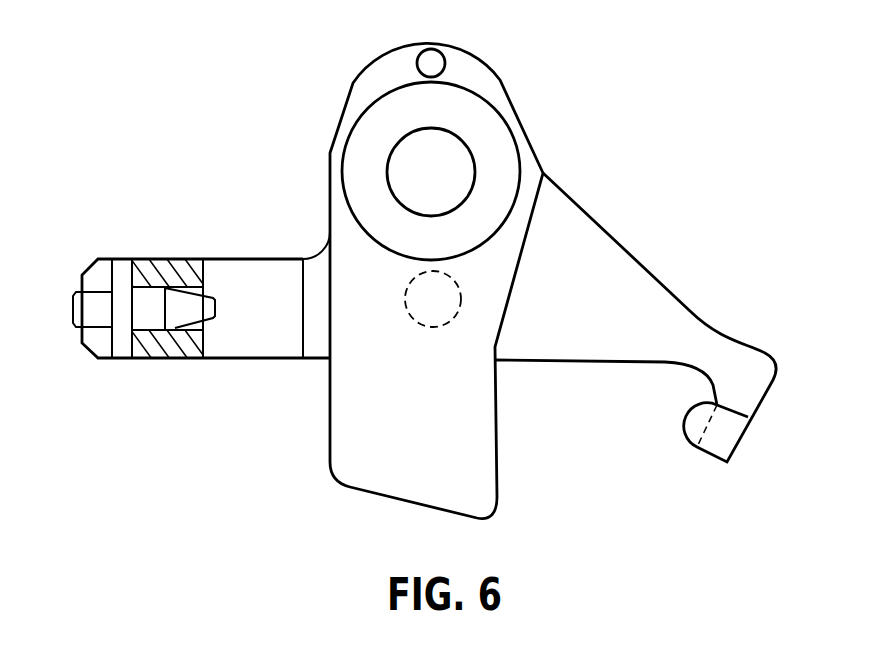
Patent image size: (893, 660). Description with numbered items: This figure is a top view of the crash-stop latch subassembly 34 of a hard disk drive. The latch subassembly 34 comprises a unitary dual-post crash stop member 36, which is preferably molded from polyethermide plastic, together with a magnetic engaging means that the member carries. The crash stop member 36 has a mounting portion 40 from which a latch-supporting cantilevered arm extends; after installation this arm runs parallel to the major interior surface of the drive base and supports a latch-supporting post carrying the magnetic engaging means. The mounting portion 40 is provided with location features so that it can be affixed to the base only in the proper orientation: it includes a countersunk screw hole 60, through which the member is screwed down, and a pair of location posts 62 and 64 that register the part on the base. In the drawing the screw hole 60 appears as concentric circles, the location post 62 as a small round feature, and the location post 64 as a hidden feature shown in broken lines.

The latch subassembly 34 is at (238, 398).
The unitary dual-post crash stop member 36 is at (620, 297).
The mounting portion 40 is at (509, 459).
The countersunk screw hole 60 is at (470, 145).
The location post 62 is at (432, 60).
The location post 64 is at (422, 325).